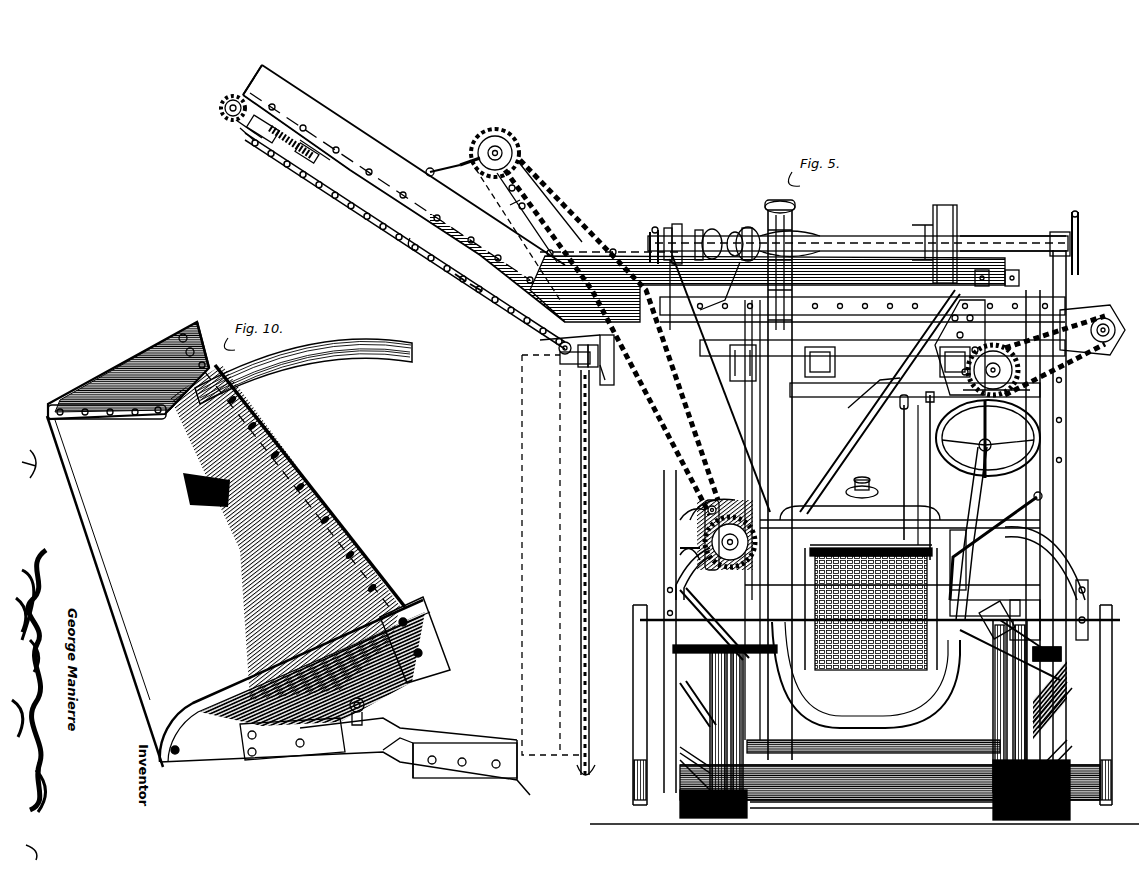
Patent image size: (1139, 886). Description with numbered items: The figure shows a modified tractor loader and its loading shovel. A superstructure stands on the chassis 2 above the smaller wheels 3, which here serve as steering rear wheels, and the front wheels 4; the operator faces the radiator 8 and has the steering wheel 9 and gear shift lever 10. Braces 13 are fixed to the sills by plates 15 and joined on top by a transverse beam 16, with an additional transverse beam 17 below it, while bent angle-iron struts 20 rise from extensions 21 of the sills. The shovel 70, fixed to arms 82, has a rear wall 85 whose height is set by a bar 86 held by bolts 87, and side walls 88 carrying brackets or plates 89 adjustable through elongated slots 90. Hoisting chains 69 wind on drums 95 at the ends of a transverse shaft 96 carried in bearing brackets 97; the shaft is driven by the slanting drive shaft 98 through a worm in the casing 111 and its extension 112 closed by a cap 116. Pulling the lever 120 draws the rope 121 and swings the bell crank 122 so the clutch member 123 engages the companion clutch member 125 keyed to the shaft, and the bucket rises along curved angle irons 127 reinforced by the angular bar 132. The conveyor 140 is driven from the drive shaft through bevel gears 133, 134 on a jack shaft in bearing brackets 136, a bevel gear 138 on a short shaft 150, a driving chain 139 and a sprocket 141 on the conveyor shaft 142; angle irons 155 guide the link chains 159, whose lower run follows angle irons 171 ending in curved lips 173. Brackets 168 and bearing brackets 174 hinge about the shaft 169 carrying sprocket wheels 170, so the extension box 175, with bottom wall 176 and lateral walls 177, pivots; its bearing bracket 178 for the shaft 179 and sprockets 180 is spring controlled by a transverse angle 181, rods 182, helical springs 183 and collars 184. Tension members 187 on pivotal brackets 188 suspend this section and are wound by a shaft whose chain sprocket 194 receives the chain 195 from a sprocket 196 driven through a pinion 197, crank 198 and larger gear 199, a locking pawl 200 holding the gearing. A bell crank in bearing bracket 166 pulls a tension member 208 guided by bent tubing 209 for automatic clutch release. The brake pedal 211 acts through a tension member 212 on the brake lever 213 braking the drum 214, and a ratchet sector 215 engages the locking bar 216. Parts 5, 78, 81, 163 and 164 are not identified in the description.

In FIG. 5, the chassis 2 is at (760, 630).
In FIG. 5, the smaller wheels 3 is at (752, 812).
In FIG. 5, the front wheels 4 is at (678, 760).
In FIG. 5, the wheel brace 5 is at (680, 705).
In FIG. 5, the radiator 8 is at (822, 560).
In FIG. 5, the steering wheel 9 is at (1005, 450).
In FIG. 5, the gear shift lever 10 is at (1034, 496).
In FIG. 5, the braces 13 is at (760, 412).
In FIG. 5, the plates 15 is at (745, 615).
In FIG. 5, the transverse beam 16 is at (860, 300).
In FIG. 5, the additional transverse beam 17 is at (840, 397).
In FIG. 5, the struts 20 is at (672, 578).
In FIG. 5, the extensions 21 is at (685, 655).
In FIG. 5, the chains 69 is at (656, 228).
In FIG. 10, the shovel 70 is at (45, 419).
In FIG. 5, the brace 78 is at (684, 688).
In FIG. 10, the fender 81 is at (85, 492).
In FIG. 5, the fender 81 is at (952, 672).
In FIG. 10, the arms 82 is at (412, 352).
In FIG. 5, the arms 82 is at (634, 700).
In FIG. 10, the rear wall 85 is at (292, 458).
In FIG. 10, the additional bar 86 is at (420, 705).
In FIG. 10, the bolts 87 is at (257, 440).
In FIG. 10, the side walls 88 is at (78, 392).
In FIG. 10, the brackets or plates 89 is at (203, 320).
In FIG. 10, the elongated slots 90 is at (178, 340).
In FIG. 5, the drums 95 is at (651, 232).
In FIG. 5, the transverse shaft 96 is at (1015, 235).
In FIG. 5, the bearing brackets 97 is at (1052, 236).
In FIG. 5, the drive shaft 98 is at (774, 470).
In FIG. 5, the worm gear casing 111 is at (810, 240).
In FIG. 5, the extension 112 is at (758, 230).
In FIG. 5, the closure cap 116 is at (780, 215).
In FIG. 5, the lever 120 is at (902, 430).
In FIG. 5, the rope 121 is at (745, 438).
In FIG. 5, the bell crank 122 is at (715, 229).
In FIG. 5, the clutch member 123 is at (748, 228).
In FIG. 5, the companion clutch member 125 is at (733, 232).
In FIG. 5, the curved angle irons 127 is at (664, 500).
In FIG. 5, the transverse angular bar 132 is at (930, 410).
In FIG. 5, the bevel gear 133 is at (755, 378).
In FIG. 5, the bevel gear 134 is at (805, 402).
In FIG. 5, the bearing brackets 136 is at (820, 348).
In FIG. 5, the bevel gear 138 is at (1005, 395).
In FIG. 5, the driving chain 139 is at (1066, 390).
In FIG. 5, the conveyor 140 is at (618, 245).
In FIG. 5, the sprocket 141 is at (1090, 352).
In FIG. 5, the transverse shaft 142 is at (1108, 318).
In FIG. 5, the short shaft 150 is at (1018, 380).
In FIG. 5, the longitudinal angle irons 155 is at (870, 395).
In FIG. 5, the link chains 159 is at (345, 208).
In FIG. 5, the chain link 163 is at (456, 272).
In FIG. 5, the chain link 164 is at (470, 284).
In FIG. 5, the bearing bracket 166 is at (1010, 282).
In FIG. 5, the brackets 168 is at (598, 370).
In FIG. 5, the shaft 169 is at (580, 362).
In FIG. 5, the sprocket wheels 170 is at (565, 362).
In FIG. 5, the angle irons 171 is at (732, 355).
In FIG. 5, the curved lips 173 is at (614, 372).
In FIG. 5, the bearing brackets 174 is at (558, 346).
In FIG. 5, the extension box 175 is at (522, 583).
In FIG. 5, the bottom wall 176 is at (385, 190).
In FIG. 5, the lateral walls 177 is at (398, 165).
In FIG. 5, the bearing bracket 178 is at (262, 94).
In FIG. 5, the shaft 179 is at (232, 100).
In FIG. 5, the sprockets 180 is at (238, 126).
In FIG. 5, the transverse angle 181 is at (310, 160).
In FIG. 5, the rods 182 is at (252, 140).
In FIG. 5, the helical springs 183 is at (300, 158).
In FIG. 5, the washers or collars 184 is at (280, 140).
In FIG. 5, the tension members 187 is at (445, 166).
In FIG. 5, the pivotal bracket 188 is at (460, 166).
In FIG. 5, the chain sprocket 194 is at (520, 160).
In FIG. 5, the chain 195 is at (660, 455).
In FIG. 5, the sprocket 196 is at (680, 548).
In FIG. 5, the pinion 197 is at (690, 500).
In FIG. 5, the detachable crank 198 is at (690, 522).
In FIG. 5, the larger gear 199 is at (698, 556).
In FIG. 5, the locking pawl 200 is at (735, 520).
In FIG. 5, the tension member 208 is at (680, 226).
In FIG. 5, the bent tubing 209 is at (672, 230).
In FIG. 5, the brake pedal 211 is at (1078, 590).
In FIG. 5, the tension member 212 is at (915, 430).
In FIG. 5, the brake lever 213 is at (958, 545).
In FIG. 5, the drum 214 is at (952, 210).
In FIG. 5, the ratchet sector 215 is at (1012, 610).
In FIG. 5, the transverse locking bar 216 is at (1030, 655).